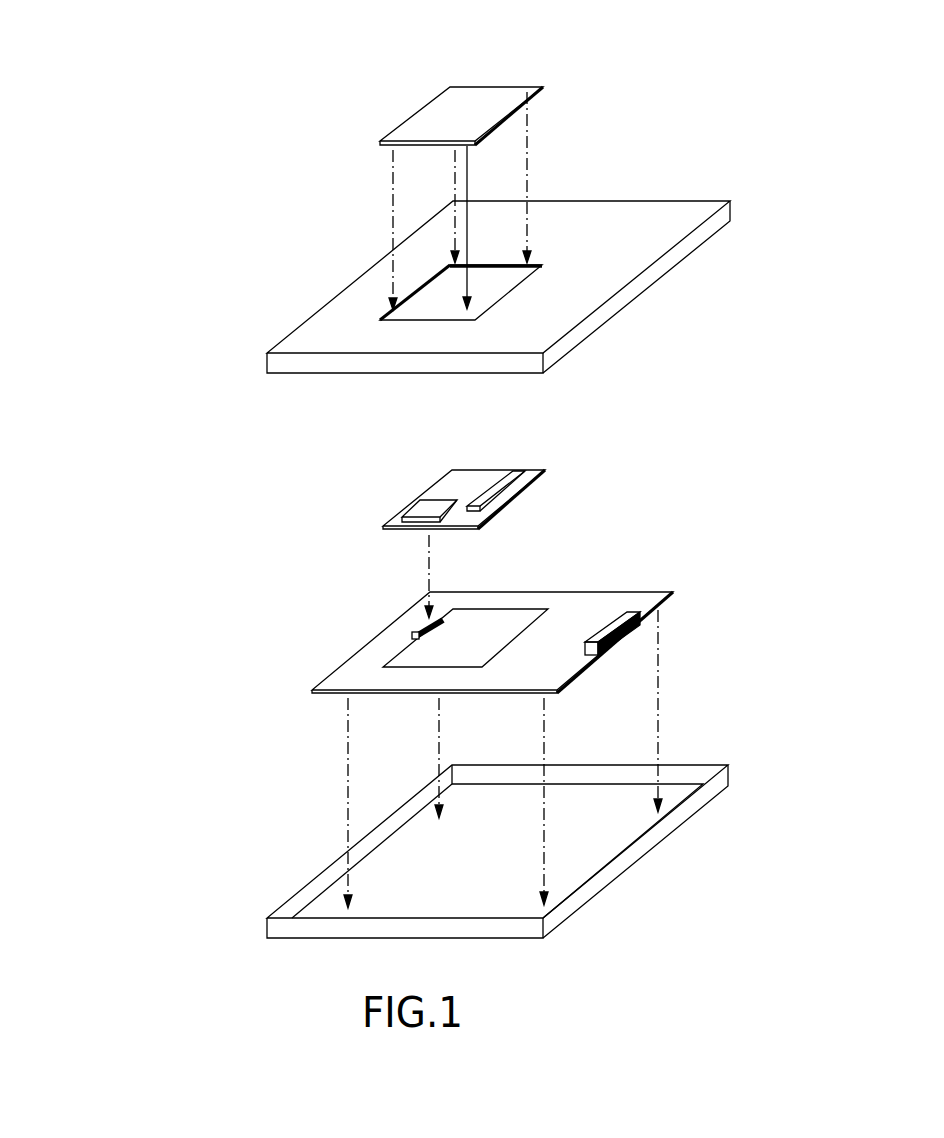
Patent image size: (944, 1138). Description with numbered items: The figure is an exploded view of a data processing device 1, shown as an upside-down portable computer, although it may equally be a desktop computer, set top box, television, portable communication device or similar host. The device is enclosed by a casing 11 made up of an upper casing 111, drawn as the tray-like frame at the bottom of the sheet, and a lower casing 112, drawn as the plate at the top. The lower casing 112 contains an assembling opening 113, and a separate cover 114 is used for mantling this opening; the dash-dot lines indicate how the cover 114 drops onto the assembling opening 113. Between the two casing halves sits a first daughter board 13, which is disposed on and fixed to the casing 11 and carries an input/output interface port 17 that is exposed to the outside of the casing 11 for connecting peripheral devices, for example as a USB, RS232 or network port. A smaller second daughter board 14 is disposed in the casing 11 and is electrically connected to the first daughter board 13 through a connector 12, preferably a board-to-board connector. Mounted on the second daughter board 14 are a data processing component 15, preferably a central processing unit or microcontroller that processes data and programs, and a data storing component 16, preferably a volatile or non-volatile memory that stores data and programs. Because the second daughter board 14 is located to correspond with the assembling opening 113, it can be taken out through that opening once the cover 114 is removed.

The data processing device 1 is at (262, 106).
The casing 11 is at (122, 568).
The upper casing 111 is at (268, 883).
The lower casing 112 is at (250, 386).
The assembling opening 113 is at (490, 283).
The cover 114 is at (507, 95).
The connector 12 is at (417, 633).
The first daughter board 13 is at (553, 592).
The second daughter board 14 is at (467, 472).
The data processing component 15 is at (420, 508).
The data storing component 16 is at (510, 480).
The input/output interface port 17 is at (625, 612).